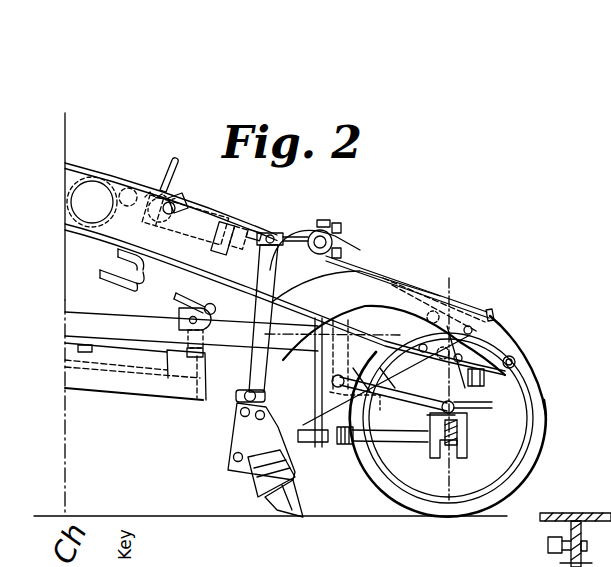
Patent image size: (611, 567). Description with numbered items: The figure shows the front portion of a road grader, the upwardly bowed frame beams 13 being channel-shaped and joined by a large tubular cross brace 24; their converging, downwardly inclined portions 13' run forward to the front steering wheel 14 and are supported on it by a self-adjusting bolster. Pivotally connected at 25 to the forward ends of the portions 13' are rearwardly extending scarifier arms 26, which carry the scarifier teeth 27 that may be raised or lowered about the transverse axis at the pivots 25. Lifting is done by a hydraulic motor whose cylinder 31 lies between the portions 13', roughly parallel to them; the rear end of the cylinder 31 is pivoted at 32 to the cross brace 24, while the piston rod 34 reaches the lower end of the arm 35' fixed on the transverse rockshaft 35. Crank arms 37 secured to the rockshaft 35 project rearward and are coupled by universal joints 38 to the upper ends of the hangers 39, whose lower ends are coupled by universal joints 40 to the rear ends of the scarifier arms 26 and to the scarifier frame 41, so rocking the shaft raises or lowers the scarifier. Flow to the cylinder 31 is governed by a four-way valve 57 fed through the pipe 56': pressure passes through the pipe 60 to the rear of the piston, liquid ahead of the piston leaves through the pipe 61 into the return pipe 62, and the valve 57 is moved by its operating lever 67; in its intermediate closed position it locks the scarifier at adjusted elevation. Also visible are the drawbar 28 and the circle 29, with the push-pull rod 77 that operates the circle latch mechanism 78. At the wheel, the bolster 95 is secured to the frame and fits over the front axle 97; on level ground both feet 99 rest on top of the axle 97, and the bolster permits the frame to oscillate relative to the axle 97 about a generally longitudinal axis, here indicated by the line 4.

The frame beam 13 is at (186, 175).
The piston rod 34 is at (285, 299).
The cylindrical cross brace 24 is at (79, 178).
The pivot 32 is at (127, 187).
The pipe 60 is at (158, 198).
The operating lever 67 is at (173, 157).
The valve 57 is at (184, 196).
The cylinder 31 is at (200, 214).
The pipe 61 is at (222, 226).
The universal joint 38 is at (270, 232).
The hanger 39 is at (257, 313).
The crank arm 37 is at (294, 226).
The rockshaft 35 is at (329, 222).
The arm 35' is at (410, 265).
The converging frame portion 13' is at (480, 397).
The scarifier arm 26 is at (407, 278).
The pivot 25 is at (516, 360).
The wheel 14 is at (537, 392).
The foot 99 is at (455, 415).
The axle 97 is at (458, 430).
The bolster 95 is at (432, 392).
The axis 4 is at (448, 379).
The drawbar 28 is at (93, 327).
The circle 29 is at (182, 401).
The circle latch mechanism 78 is at (177, 317).
The rod 77 is at (183, 294).
The return pipe 62 is at (117, 253).
The pipe 56' is at (105, 283).
The universal joint 40 is at (240, 403).
The scarifier frame 41 is at (258, 430).
The scarifier tooth 27 is at (287, 503).